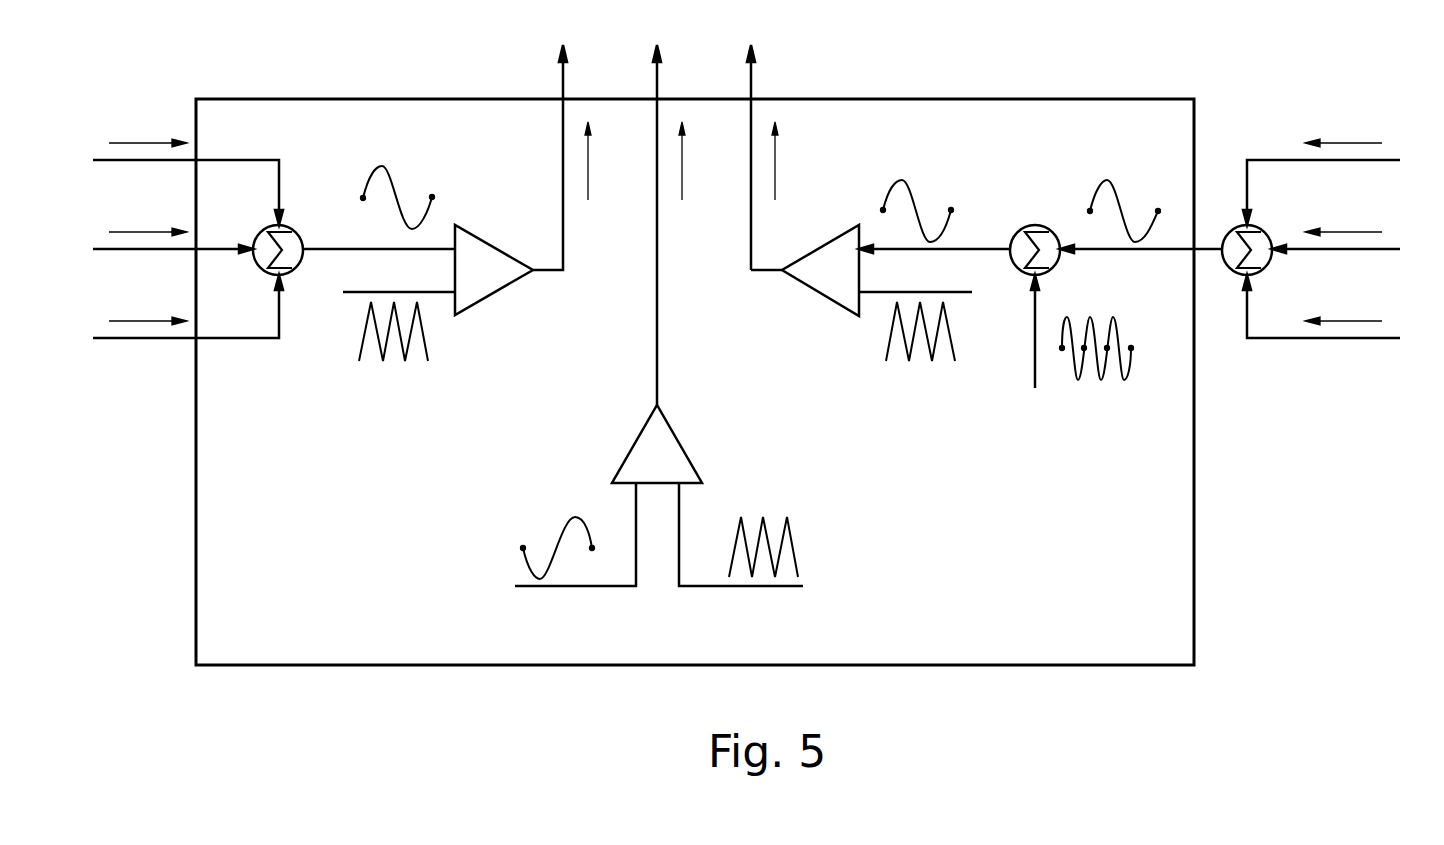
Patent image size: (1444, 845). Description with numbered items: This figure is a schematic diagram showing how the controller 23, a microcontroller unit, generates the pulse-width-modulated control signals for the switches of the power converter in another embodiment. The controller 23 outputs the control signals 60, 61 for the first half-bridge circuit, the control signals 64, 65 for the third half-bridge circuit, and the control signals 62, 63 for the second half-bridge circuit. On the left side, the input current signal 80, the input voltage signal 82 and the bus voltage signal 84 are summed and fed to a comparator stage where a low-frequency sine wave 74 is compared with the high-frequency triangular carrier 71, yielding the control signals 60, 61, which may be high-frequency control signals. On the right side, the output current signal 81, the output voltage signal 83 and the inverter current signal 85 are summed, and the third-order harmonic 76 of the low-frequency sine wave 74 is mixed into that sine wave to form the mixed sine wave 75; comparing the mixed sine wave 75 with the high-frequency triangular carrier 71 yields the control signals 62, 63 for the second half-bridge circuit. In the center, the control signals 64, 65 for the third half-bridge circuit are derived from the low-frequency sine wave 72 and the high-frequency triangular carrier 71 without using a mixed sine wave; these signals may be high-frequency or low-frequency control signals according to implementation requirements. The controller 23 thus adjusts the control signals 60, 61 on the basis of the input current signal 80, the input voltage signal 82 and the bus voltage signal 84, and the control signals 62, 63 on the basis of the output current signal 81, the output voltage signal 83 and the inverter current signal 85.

The controller 23 is at (993, 665).
The control signal 60 is at (623, 106).
The control signal 61 is at (588, 160).
The control signal 62 is at (810, 106).
The control signal 63 is at (775, 160).
The control signal 64 is at (716, 106).
The control signal 65 is at (682, 160).
The high-frequency triangular carrier 71 is at (428, 341).
The low-frequency sine wave 72 is at (557, 527).
The low-frequency sine wave 74 is at (380, 166).
The mixed sine wave 75 is at (902, 180).
The third-order harmonic of the low-frequency sine wave 76 is at (1096, 375).
The input current signal 80 is at (130, 232).
The output current signal 81 is at (1358, 143).
The input voltage signal 82 is at (136, 143).
The output voltage signal 83 is at (1360, 232).
The bus voltage signal 84 is at (136, 321).
The inverter current signal 85 is at (1358, 321).